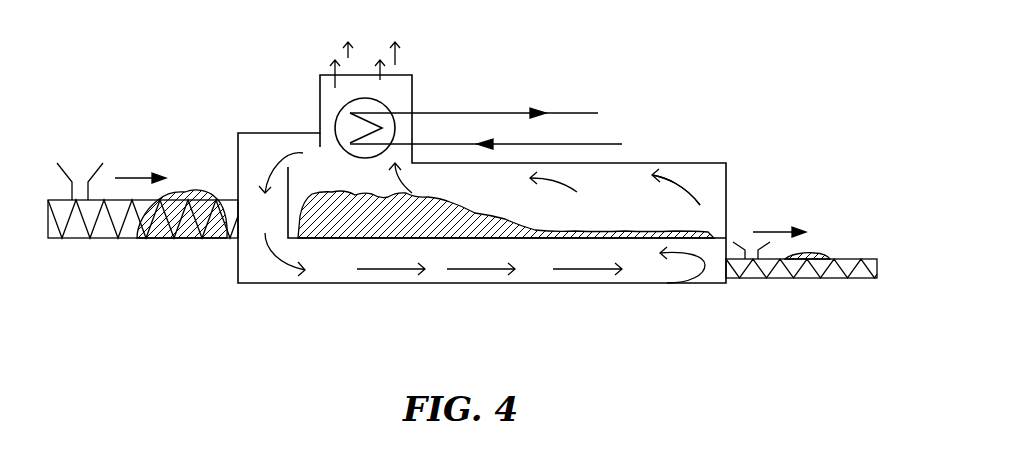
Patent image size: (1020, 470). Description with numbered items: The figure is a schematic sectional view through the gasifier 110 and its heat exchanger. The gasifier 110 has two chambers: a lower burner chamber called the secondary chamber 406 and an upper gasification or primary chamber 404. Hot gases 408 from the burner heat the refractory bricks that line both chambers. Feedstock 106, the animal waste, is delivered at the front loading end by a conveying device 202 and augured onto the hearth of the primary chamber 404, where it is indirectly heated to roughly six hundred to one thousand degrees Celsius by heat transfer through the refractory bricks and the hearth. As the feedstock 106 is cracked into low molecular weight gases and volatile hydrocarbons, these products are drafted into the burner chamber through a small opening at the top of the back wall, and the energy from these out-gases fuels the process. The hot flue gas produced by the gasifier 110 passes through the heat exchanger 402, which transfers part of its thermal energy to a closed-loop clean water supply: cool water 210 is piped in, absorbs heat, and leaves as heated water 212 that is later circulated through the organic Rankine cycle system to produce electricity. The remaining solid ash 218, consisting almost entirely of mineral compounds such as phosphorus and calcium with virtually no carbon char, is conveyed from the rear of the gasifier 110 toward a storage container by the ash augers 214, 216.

The feedstock 106 is at (193, 192).
The gasifier 110 is at (275, 133).
The inlet conveyor 202 is at (120, 238).
The cool water 210 is at (605, 144).
The heated water 212 is at (572, 113).
The ash auger 214 is at (790, 284).
The ash auger 216 is at (825, 278).
The ash 218 is at (828, 253).
The heat exchanger 402 is at (386, 107).
The primary chamber 404 is at (703, 185).
The secondary chamber 406 is at (652, 267).
The hot gases 408 is at (348, 57).